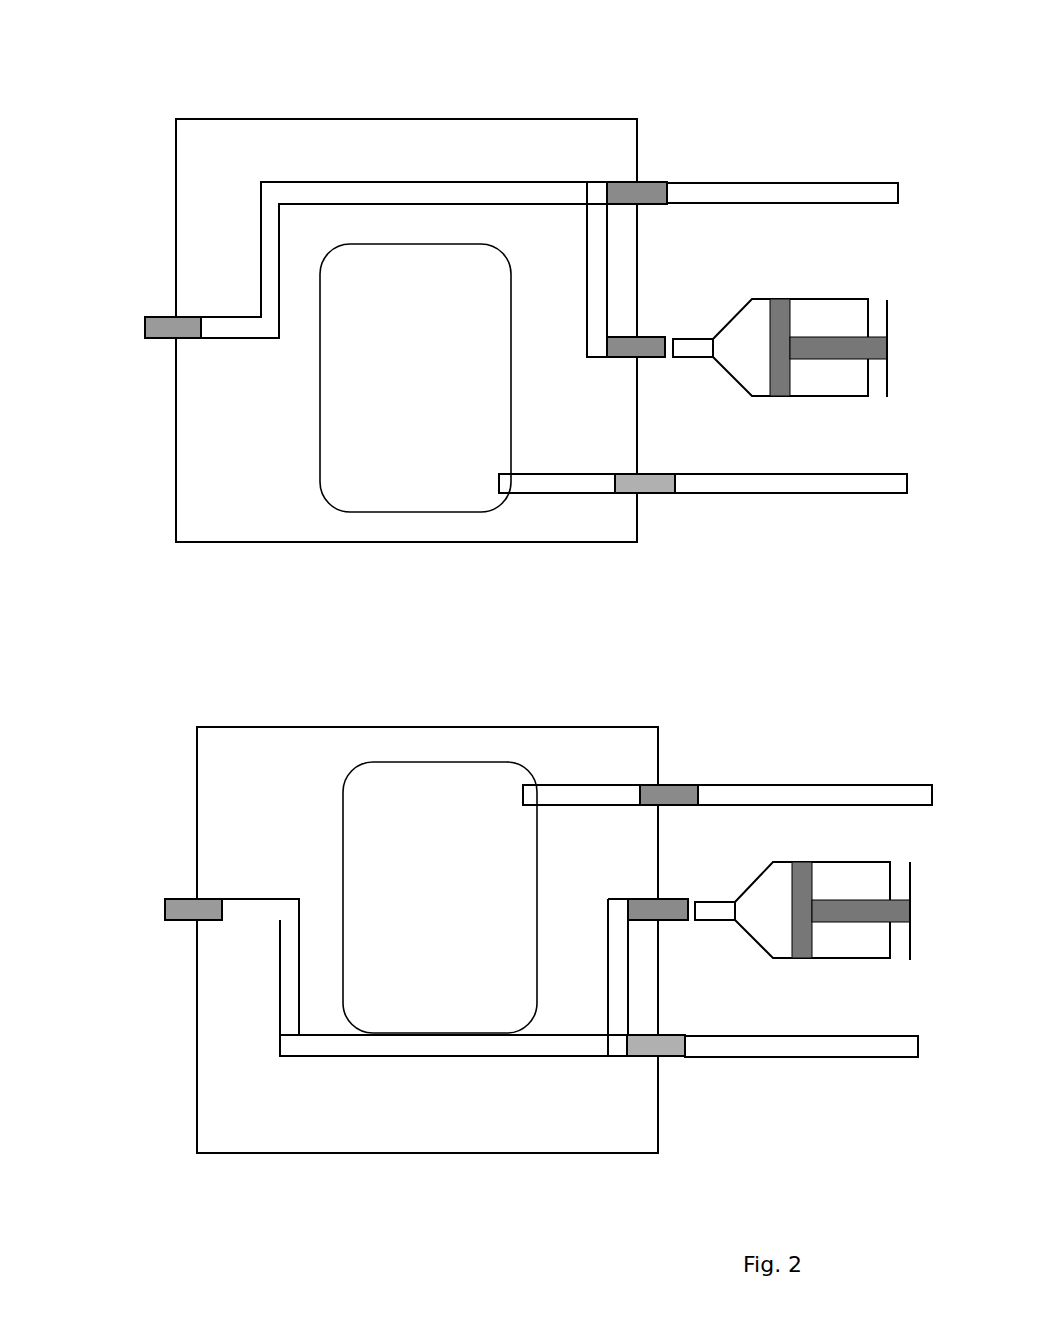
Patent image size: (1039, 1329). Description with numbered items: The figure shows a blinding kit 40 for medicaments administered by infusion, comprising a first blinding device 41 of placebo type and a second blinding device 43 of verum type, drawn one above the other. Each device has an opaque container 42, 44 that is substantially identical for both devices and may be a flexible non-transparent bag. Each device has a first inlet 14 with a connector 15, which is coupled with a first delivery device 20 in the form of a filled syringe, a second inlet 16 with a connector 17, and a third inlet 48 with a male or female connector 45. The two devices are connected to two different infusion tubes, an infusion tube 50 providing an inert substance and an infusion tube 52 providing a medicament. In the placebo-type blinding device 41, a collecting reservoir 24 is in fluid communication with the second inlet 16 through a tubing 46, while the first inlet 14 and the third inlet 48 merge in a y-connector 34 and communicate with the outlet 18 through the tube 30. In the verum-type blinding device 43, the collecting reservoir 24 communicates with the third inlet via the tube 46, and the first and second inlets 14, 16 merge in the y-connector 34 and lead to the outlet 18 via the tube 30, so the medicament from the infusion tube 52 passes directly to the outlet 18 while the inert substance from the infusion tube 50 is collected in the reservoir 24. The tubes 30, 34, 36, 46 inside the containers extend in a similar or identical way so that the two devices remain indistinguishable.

The first inlet 14 is at (652, 322).
The connector 15 is at (657, 356).
The second inlet 16 is at (648, 510).
The connector 17 is at (666, 495).
The outlet 18 is at (156, 340).
The first delivery device 20 is at (753, 386).
The collecting reservoir 24 is at (378, 503).
The tube 30 is at (405, 184).
The y-connector 34 is at (598, 184).
The tube 36 is at (590, 257).
The blinding kit 40 is at (128, 650).
The first blinding device 41 is at (240, 72).
The opaque container 42 is at (567, 127).
The second blinding device 43 is at (334, 682).
The opaque container 44 is at (590, 735).
The connector 45 is at (657, 196).
The tubing 46 is at (570, 472).
The third inlet 48 is at (652, 160).
The infusion tube 50 is at (778, 195).
The infusion tube 52 is at (803, 485).